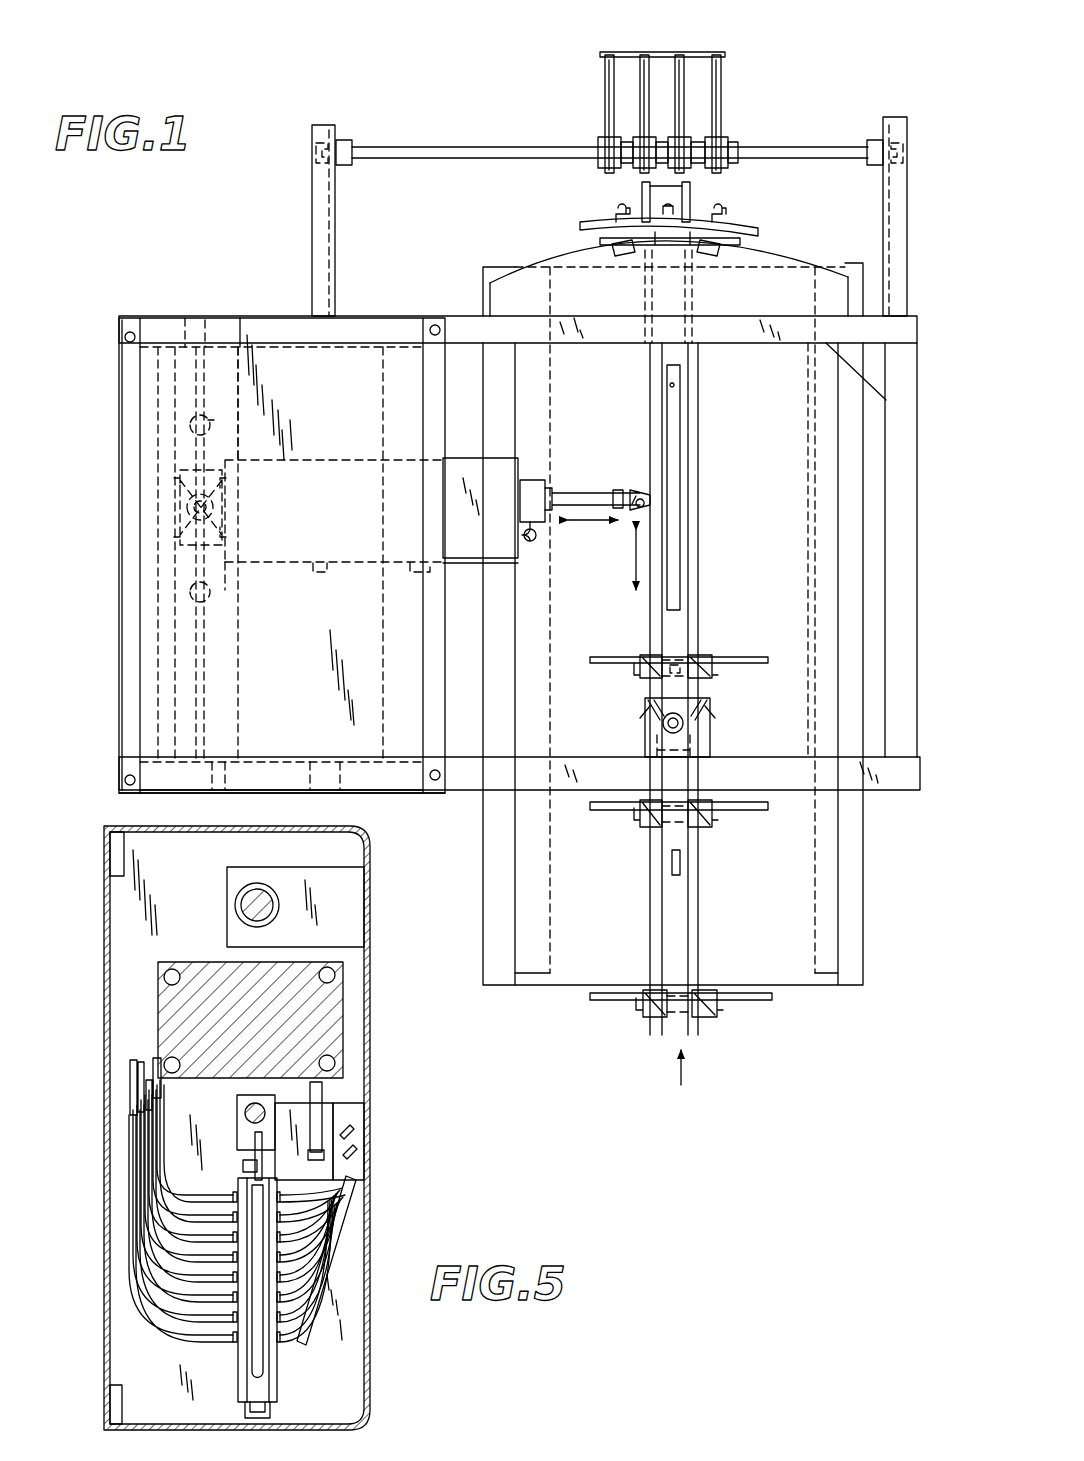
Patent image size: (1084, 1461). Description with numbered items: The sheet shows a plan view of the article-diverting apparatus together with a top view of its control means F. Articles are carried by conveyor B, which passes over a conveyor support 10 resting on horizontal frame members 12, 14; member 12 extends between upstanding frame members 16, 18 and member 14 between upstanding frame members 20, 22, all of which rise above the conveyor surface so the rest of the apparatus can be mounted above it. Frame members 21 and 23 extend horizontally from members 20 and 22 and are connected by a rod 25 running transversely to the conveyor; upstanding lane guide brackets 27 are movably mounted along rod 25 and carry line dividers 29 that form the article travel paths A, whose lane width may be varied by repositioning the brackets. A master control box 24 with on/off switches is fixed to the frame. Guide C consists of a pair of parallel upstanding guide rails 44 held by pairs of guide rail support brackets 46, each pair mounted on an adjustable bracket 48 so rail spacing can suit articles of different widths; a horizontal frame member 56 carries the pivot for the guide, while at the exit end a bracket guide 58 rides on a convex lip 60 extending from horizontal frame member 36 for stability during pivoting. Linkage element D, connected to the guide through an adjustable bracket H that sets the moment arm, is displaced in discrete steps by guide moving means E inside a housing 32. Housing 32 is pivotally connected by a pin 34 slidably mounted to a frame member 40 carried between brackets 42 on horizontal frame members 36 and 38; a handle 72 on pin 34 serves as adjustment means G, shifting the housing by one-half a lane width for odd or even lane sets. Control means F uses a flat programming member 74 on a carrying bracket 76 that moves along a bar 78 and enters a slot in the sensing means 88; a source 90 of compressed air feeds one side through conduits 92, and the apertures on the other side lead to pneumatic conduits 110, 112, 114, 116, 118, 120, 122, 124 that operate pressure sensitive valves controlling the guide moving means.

In FIG. 1, the conveyor support 10 is at (796, 792).
In FIG. 1, the horizontal frame member 12 is at (560, 790).
In FIG. 1, the horizontal frame member 14 is at (790, 260).
In FIG. 1, the upstanding frame member 16 is at (903, 790).
In FIG. 1, the upstanding frame member 18 is at (330, 798).
In FIG. 1, the upstanding frame member 20 is at (782, 335).
In FIG. 1, the frame member 21 is at (893, 183).
In FIG. 1, the upstanding frame member 22 is at (335, 335).
In FIG. 1, the frame member 23 is at (322, 246).
In FIG. 1, the master control box 24 is at (298, 775).
In FIG. 1, the rod 25 is at (503, 118).
In FIG. 1, the lane guide bracket 27 is at (647, 77).
In FIG. 1, the line divider 29 is at (686, 110).
In FIG. 1, the housing 32 is at (350, 572).
In FIG. 1, the pin 34 is at (185, 510).
In FIG. 1, the horizontal frame member 36 is at (248, 318).
In FIG. 1, the horizontal frame member 38 is at (128, 795).
In FIG. 1, the frame member 40 is at (170, 708).
In FIG. 1, the bracket 42 is at (187, 335).
In FIG. 1, the guide rail 44 is at (655, 905).
In FIG. 1, the guide rail support bracket 46 is at (785, 628).
In FIG. 1, the adjustable bracket 48 is at (628, 255).
In FIG. 1, the horizontal frame member 56 is at (735, 763).
In FIG. 1, the bracket guide 58 is at (590, 228).
In FIG. 1, the convex lip 60 is at (762, 254).
In FIG. 1, the handle 72 is at (206, 416).
In FIG. 5, the programming member 74 is at (245, 1170).
In FIG. 5, the carrying bracket 76 is at (256, 1146).
In FIG. 5, the bar 78 is at (243, 1110).
In FIG. 5, the sensing means 88 is at (280, 1392).
In FIG. 5, the source of pressurized fluid 90 is at (360, 1127).
In FIG. 5, the pneumatic conduit 92 is at (318, 1262).
In FIG. 5, the pneumatic conduit 110 is at (251, 1145).
In FIG. 5, the pneumatic conduit 112 is at (248, 1153).
In FIG. 5, the pneumatic conduit 114 is at (245, 1168).
In FIG. 5, the pneumatic conduit 116 is at (242, 1180).
In FIG. 5, the pneumatic conduit 118 is at (239, 1193).
In FIG. 5, the pneumatic conduit 120 is at (236, 1205).
In FIG. 5, the pneumatic conduit 122 is at (233, 1218).
In FIG. 5, the pneumatic conduit 124 is at (230, 1230).
In FIG. 1, the article travel paths A is at (735, 113).
In FIG. 1, the conveyor B is at (770, 481).
In FIG. 1, the guide C is at (700, 576).
In FIG. 1, the linkage element D is at (582, 493).
In FIG. 1, the guide moving means E is at (326, 460).
In FIG. 1, the control means F is at (285, 568).
In FIG. 5, the control means F is at (236, 1353).
In FIG. 1, the adjustment means G is at (222, 422).
In FIG. 1, the adjustable bracket H is at (634, 512).